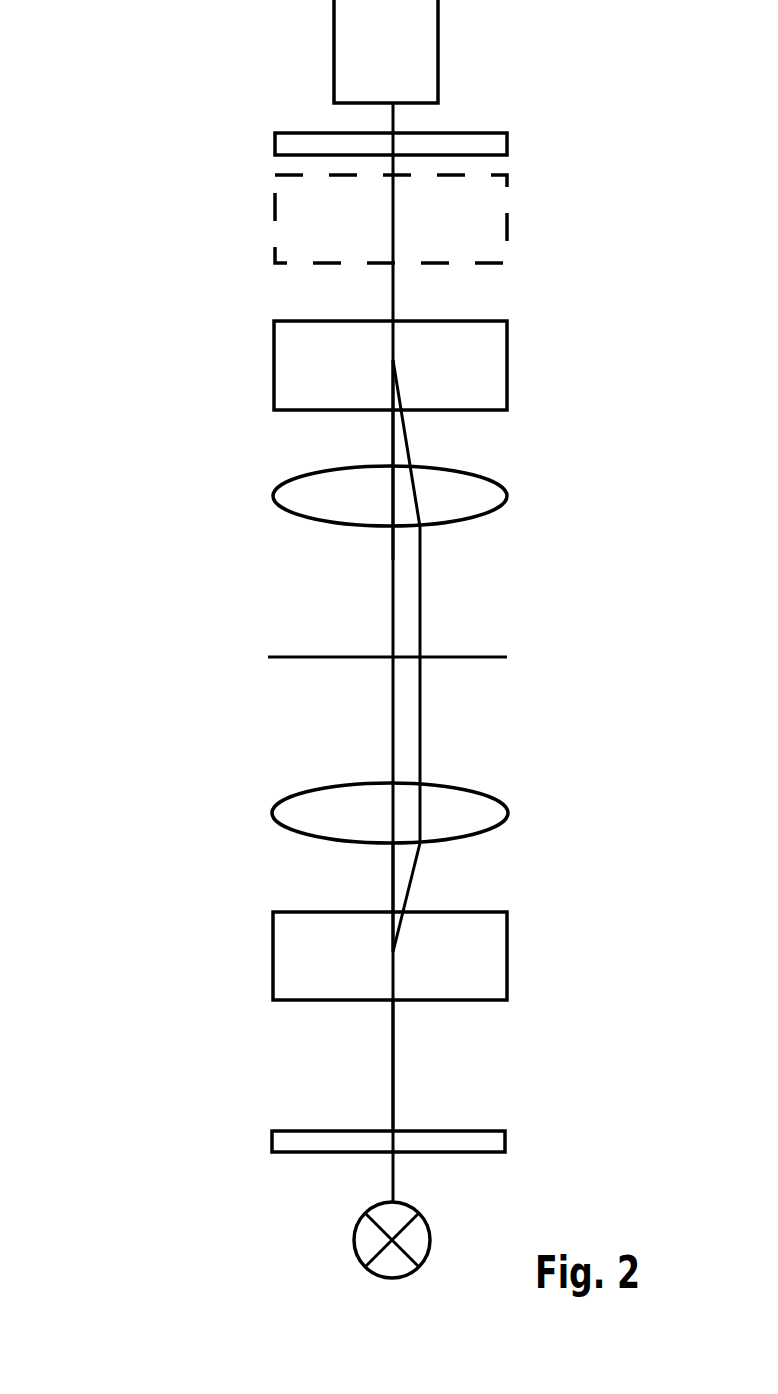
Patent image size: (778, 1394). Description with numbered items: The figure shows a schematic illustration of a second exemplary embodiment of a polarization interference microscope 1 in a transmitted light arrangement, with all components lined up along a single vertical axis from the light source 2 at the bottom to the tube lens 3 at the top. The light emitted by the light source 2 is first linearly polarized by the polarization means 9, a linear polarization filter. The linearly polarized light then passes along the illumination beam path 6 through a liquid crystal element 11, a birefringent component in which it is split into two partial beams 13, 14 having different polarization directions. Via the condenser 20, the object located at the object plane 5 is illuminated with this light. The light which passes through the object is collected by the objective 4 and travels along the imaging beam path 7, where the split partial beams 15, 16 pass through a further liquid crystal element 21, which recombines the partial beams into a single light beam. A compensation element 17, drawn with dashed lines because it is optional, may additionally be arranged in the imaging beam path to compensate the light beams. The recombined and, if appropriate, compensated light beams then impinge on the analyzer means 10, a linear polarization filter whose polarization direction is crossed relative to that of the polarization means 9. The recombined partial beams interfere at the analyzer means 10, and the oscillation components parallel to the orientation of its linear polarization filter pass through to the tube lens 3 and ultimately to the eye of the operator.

The polarization interference microscope 1 is at (151, 149).
The light source 2 is at (373, 1233).
The tube lens 3 is at (395, 68).
The objective 4 is at (460, 495).
The object plane 5 is at (507, 657).
The illumination beam path 6 is at (393, 1043).
The imaging beam path 7 is at (390, 421).
The polarization means 9 is at (505, 1138).
The analyzer means 10 is at (490, 142).
The liquid crystal element 11 is at (490, 960).
The partial beam 13 is at (388, 860).
The partial beam 14 is at (410, 888).
The partial beam 15 is at (390, 432).
The partial beam 16 is at (407, 450).
The compensation element 17 is at (490, 220).
The condenser 20 is at (465, 800).
The liquid crystal element 21 is at (490, 372).